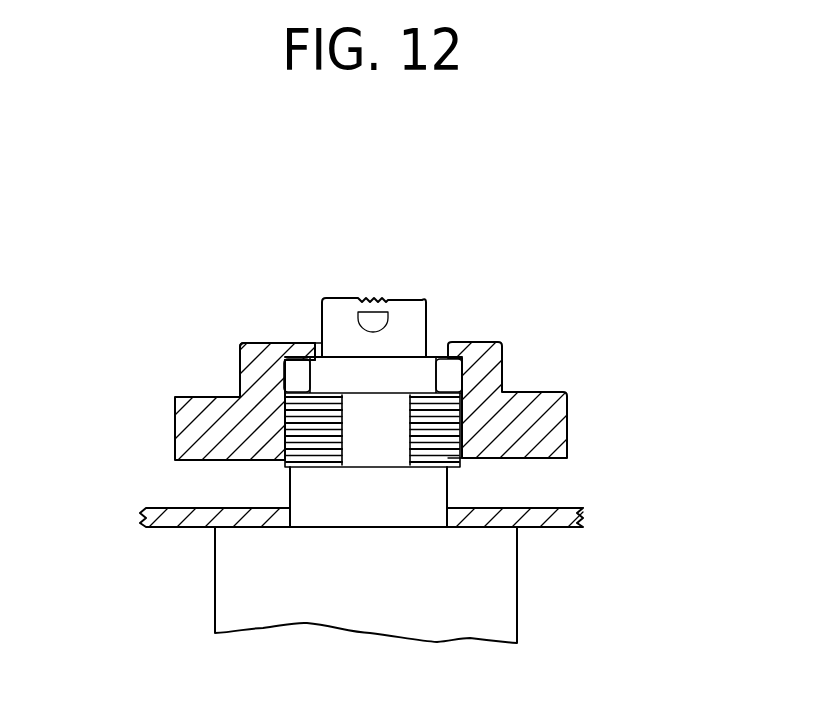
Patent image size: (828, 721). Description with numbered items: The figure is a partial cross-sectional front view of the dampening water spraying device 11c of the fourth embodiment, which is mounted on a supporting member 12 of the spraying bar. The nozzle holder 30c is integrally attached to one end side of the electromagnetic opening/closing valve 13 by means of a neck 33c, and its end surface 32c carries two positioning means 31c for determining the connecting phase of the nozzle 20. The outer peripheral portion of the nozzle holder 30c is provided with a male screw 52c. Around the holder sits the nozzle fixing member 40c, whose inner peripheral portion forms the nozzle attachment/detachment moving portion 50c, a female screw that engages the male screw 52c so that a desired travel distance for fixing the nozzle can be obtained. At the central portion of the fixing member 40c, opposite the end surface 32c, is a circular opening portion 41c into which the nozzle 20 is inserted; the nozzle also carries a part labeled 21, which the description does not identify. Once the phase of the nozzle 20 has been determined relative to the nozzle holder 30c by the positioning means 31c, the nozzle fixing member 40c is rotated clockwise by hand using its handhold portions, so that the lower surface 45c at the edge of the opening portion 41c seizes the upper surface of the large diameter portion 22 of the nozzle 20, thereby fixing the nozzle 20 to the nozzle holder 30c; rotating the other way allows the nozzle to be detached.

The spraying device 11c is at (168, 224).
The supporting member 12 is at (168, 518).
The electromagnetic opening/closing valve 13 is at (505, 592).
The nozzle 20 is at (397, 391).
The bolt head 21 is at (417, 312).
The large diameter portion 22 is at (348, 368).
The nozzle holder 30c is at (368, 445).
The positioning means 31c is at (297, 376).
The end surface 32c is at (400, 380).
The neck 33c is at (320, 512).
The nozzle fixing member 40c is at (200, 402).
The opening portion 41c is at (315, 327).
The lower surface 45c is at (280, 385).
The nozzle attachment/detachment moving portion 50c is at (466, 437).
The male screw 52c is at (465, 464).